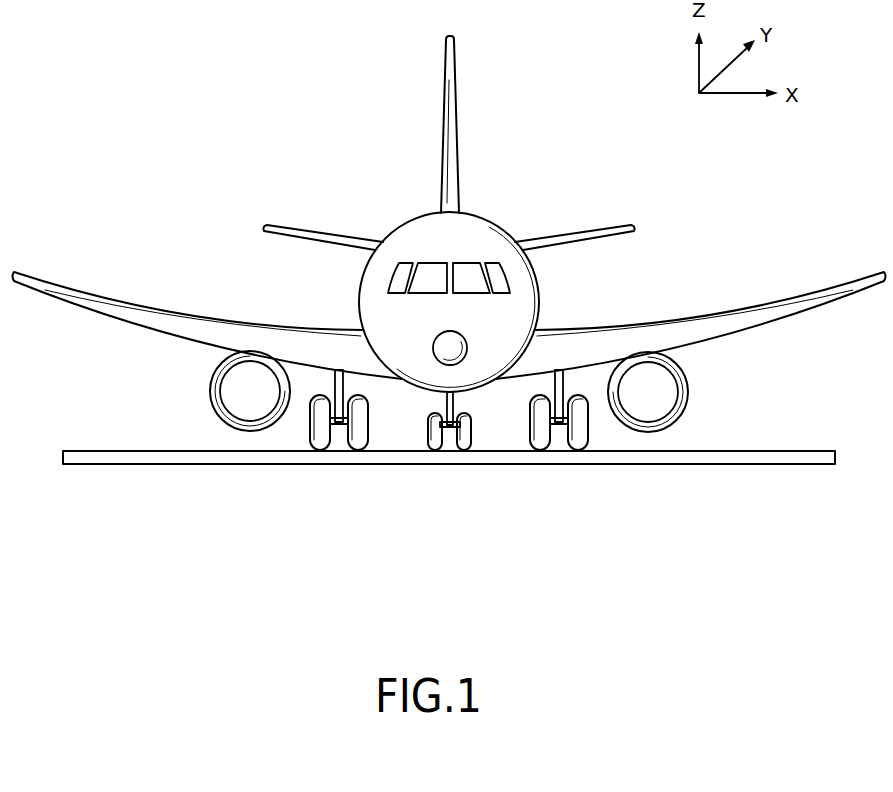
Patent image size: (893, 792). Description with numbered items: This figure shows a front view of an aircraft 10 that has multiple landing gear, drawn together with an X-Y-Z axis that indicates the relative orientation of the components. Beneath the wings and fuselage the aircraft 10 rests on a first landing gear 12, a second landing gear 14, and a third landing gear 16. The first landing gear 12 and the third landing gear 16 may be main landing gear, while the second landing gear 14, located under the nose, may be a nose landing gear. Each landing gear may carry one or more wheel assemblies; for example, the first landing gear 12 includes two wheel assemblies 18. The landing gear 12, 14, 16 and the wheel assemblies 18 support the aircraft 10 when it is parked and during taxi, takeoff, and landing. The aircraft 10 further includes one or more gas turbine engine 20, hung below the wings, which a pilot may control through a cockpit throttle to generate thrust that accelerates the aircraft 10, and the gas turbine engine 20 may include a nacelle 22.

The aircraft 10 is at (449, 265).
The first landing gear 12 is at (280, 434).
The second landing gear 14 is at (463, 440).
The third landing gear 16 is at (578, 438).
The wheel assemblies 18 is at (307, 424).
The gas turbine engine 20 is at (698, 426).
The nacelle 22 is at (687, 371).